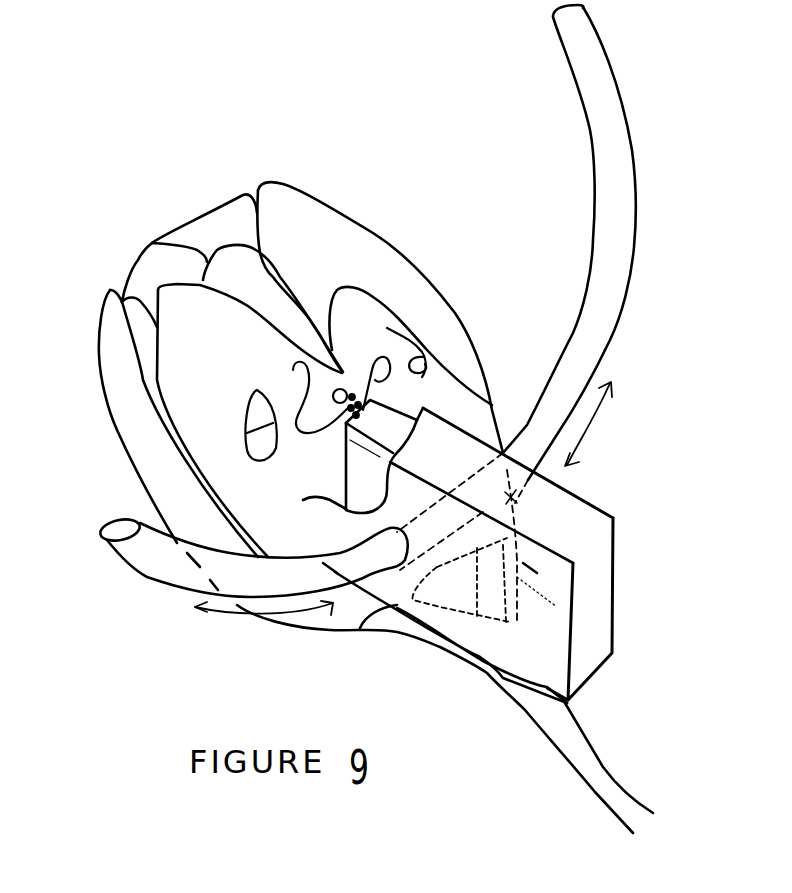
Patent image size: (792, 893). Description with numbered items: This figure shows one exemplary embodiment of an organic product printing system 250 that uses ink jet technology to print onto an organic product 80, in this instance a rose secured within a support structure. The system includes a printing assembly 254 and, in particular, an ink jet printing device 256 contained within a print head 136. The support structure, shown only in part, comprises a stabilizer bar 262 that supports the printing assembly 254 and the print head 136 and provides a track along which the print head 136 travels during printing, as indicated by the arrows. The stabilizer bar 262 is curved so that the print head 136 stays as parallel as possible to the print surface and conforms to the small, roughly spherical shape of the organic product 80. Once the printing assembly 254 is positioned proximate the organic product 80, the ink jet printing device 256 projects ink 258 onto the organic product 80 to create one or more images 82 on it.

The organic product 80 is at (223, 327).
The image 82 is at (257, 390).
The print head 136 is at (607, 626).
The organic product printing system 250 is at (662, 426).
The printing assembly 254 is at (598, 507).
The ink jet printing device 256 is at (346, 472).
The ink 258 is at (343, 405).
The stabilizer bar 262 is at (622, 163).